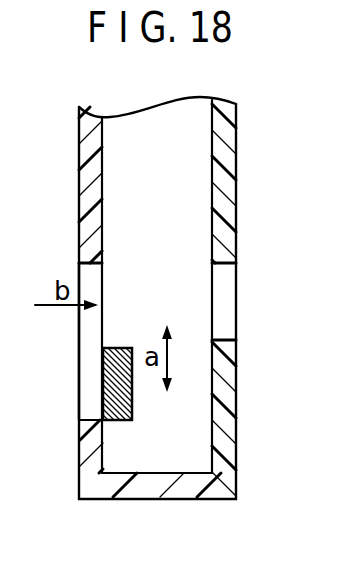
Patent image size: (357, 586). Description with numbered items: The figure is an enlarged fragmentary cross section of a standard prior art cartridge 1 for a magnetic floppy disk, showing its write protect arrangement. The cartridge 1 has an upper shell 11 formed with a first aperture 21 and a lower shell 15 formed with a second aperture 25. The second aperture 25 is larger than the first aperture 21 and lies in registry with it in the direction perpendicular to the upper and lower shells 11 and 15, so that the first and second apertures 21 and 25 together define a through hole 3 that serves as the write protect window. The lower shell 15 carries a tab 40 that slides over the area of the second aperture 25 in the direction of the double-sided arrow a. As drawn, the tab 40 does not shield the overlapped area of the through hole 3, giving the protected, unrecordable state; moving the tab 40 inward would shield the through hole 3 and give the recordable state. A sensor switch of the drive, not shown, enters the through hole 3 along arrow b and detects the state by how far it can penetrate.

The cartridge 1 is at (257, 186).
The through hole 3 is at (176, 299).
The upper shell 11 is at (238, 101).
The lower shell 15 is at (88, 168).
The first aperture 21 is at (222, 327).
The second aperture 25 is at (87, 374).
The tab 40 is at (110, 421).